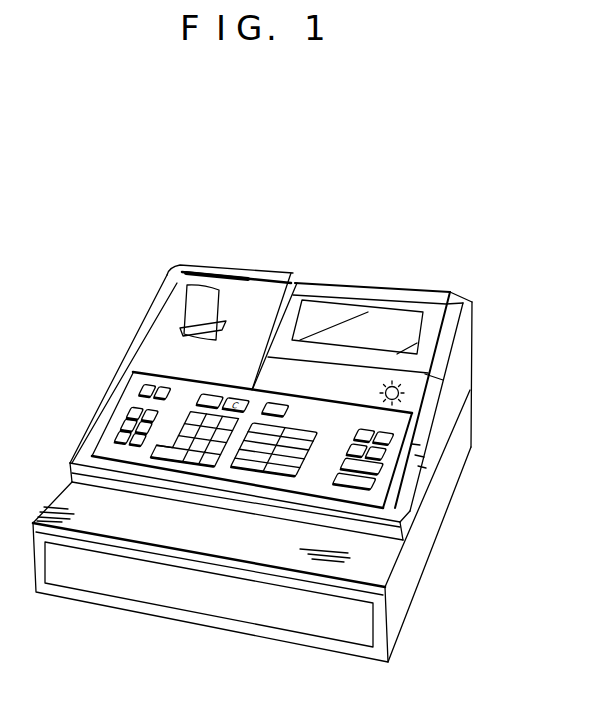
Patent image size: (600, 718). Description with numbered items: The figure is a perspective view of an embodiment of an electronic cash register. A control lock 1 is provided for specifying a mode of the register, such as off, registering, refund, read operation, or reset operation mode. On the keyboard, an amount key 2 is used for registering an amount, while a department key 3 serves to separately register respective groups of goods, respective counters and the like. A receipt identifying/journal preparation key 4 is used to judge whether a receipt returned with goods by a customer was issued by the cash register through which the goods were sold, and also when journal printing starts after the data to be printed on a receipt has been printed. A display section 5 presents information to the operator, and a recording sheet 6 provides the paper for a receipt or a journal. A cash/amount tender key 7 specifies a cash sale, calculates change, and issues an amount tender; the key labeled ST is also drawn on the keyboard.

The control lock 1 is at (400, 390).
The amount key 2 is at (177, 473).
The department key 3 is at (260, 483).
The receipt identifying/journal preparation key 4 is at (290, 410).
The display section 5 is at (378, 313).
The recording sheet 6 is at (190, 302).
The cash/amount tender key 7 is at (353, 483).
The subtotal key ST is at (381, 462).